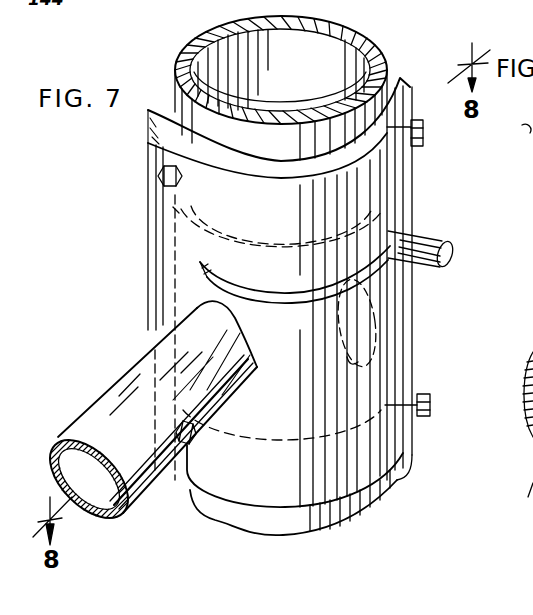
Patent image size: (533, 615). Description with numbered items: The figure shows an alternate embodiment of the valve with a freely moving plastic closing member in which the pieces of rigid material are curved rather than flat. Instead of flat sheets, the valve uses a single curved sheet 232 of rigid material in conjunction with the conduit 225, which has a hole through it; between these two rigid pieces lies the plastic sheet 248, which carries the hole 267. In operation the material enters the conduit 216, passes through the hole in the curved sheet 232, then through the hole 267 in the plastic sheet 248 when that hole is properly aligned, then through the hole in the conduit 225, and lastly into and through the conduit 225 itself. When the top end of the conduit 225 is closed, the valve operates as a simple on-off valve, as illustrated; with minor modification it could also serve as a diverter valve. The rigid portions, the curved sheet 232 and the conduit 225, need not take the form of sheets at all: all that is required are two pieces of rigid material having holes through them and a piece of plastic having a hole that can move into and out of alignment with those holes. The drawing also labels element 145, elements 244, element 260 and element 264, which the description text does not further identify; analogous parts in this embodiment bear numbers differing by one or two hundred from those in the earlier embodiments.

The component of adjacent figure 145 is at (530, 138).
The conduit 216 is at (146, 488).
The conduit 225 is at (283, 522).
The curved sheet 232 is at (418, 368).
The bolts 244 is at (158, 178).
The plastic sheet 248 is at (318, 412).
The handle 260 is at (446, 238).
The curved bracket 264 is at (274, 280).
The hole 267 is at (345, 366).